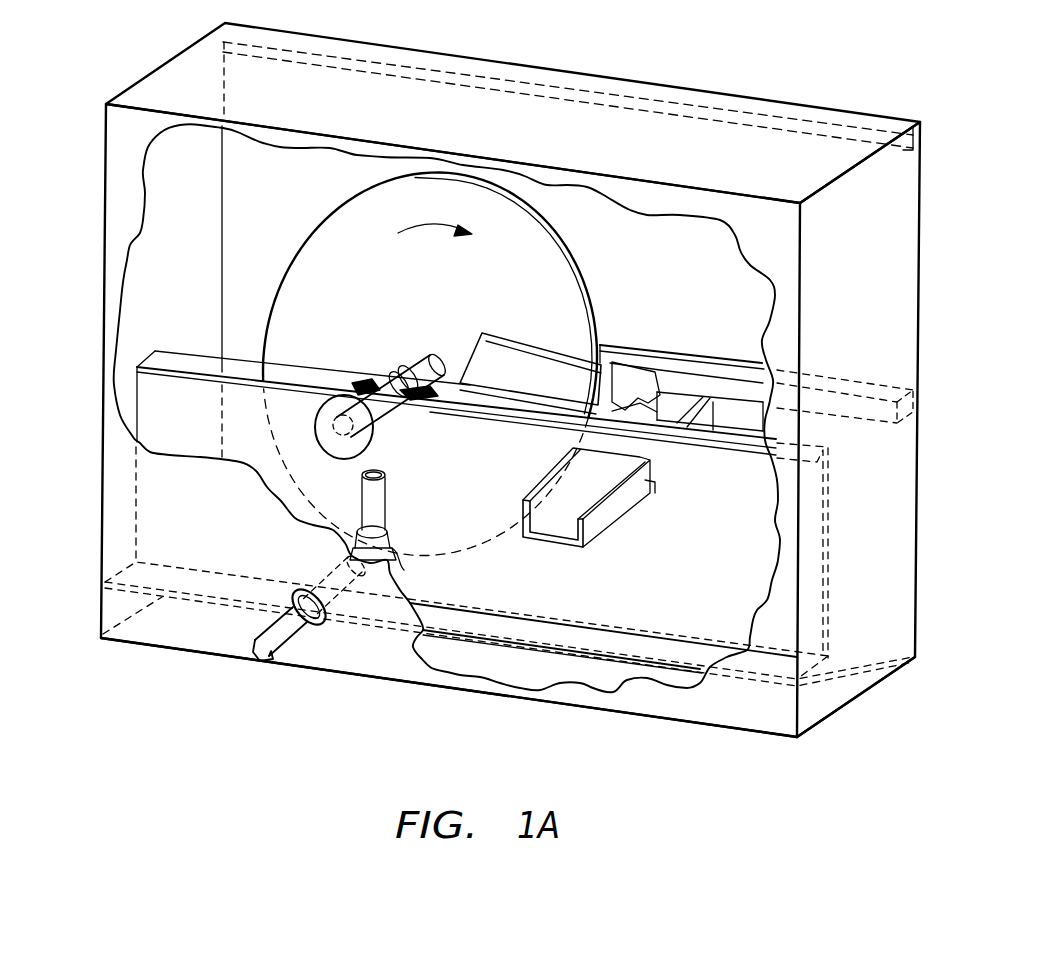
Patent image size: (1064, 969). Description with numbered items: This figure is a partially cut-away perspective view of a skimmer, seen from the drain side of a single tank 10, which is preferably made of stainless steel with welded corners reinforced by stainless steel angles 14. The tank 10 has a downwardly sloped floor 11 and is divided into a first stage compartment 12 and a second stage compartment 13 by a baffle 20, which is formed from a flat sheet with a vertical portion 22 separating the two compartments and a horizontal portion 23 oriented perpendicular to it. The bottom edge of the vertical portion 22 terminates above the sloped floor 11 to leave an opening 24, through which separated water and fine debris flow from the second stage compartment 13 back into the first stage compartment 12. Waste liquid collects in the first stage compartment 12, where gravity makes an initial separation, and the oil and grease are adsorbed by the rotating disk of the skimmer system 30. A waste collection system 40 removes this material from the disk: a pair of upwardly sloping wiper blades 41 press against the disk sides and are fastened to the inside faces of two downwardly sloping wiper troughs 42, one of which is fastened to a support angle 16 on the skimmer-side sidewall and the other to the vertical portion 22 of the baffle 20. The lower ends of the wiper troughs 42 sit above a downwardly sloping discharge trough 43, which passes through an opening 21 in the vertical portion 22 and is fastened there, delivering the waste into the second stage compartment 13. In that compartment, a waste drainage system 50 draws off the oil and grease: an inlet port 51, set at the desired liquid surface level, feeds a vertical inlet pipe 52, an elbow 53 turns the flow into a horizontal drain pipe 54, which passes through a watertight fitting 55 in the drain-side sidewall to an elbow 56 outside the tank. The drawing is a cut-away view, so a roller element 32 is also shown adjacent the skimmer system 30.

The tank 10 is at (958, 188).
The sloped floor 11 is at (865, 655).
The first stage compartment 12 is at (900, 470).
The second stage compartment 13 is at (812, 626).
The stainless steel angle 14 is at (920, 125).
The support angle 16 is at (886, 385).
The baffle 20 is at (888, 510).
The opening 21 is at (655, 490).
The vertical portion 22 is at (650, 615).
The horizontal portion 23 is at (740, 444).
The opening 24 is at (818, 665).
The skimmer system 30 is at (600, 266).
The roller with axle 32 is at (432, 368).
The waste collection system 40 is at (672, 338).
The wiper blade 41 is at (598, 382).
The wiper trough 42 is at (665, 398).
The discharge trough 43 is at (622, 503).
The waste drainage system 50 is at (398, 466).
The inlet port 51 is at (388, 480).
The vertical inlet pipe 52 is at (376, 524).
The elbow 53 is at (395, 553).
The horizontal drain pipe 54 is at (347, 565).
The watertight fitting 55 is at (305, 628).
The elbow 56 is at (258, 634).